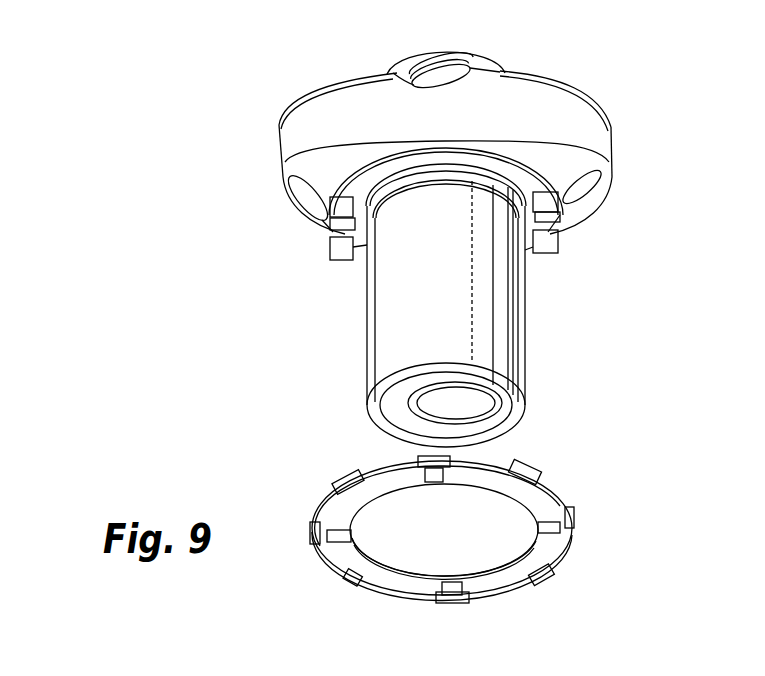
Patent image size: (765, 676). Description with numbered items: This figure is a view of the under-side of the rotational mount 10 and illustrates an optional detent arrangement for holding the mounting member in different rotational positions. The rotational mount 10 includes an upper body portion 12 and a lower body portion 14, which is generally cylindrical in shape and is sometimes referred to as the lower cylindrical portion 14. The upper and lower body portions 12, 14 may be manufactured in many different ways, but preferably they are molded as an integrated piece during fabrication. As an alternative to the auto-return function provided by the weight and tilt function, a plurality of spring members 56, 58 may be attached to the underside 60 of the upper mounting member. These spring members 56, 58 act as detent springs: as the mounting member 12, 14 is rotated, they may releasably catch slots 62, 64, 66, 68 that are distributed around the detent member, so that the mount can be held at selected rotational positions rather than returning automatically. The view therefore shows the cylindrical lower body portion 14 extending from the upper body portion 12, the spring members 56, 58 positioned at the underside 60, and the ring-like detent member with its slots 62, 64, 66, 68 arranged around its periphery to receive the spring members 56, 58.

The rotational mount 10 is at (178, 133).
The upper body portion 12 is at (305, 122).
The lower body portion 14 is at (367, 337).
The spring member 56 is at (548, 255).
The spring member 58 is at (340, 260).
The underside 60 is at (295, 167).
The slot 62 is at (338, 541).
The slot 64 is at (443, 588).
The slot 66 is at (545, 518).
The slot 68 is at (445, 477).